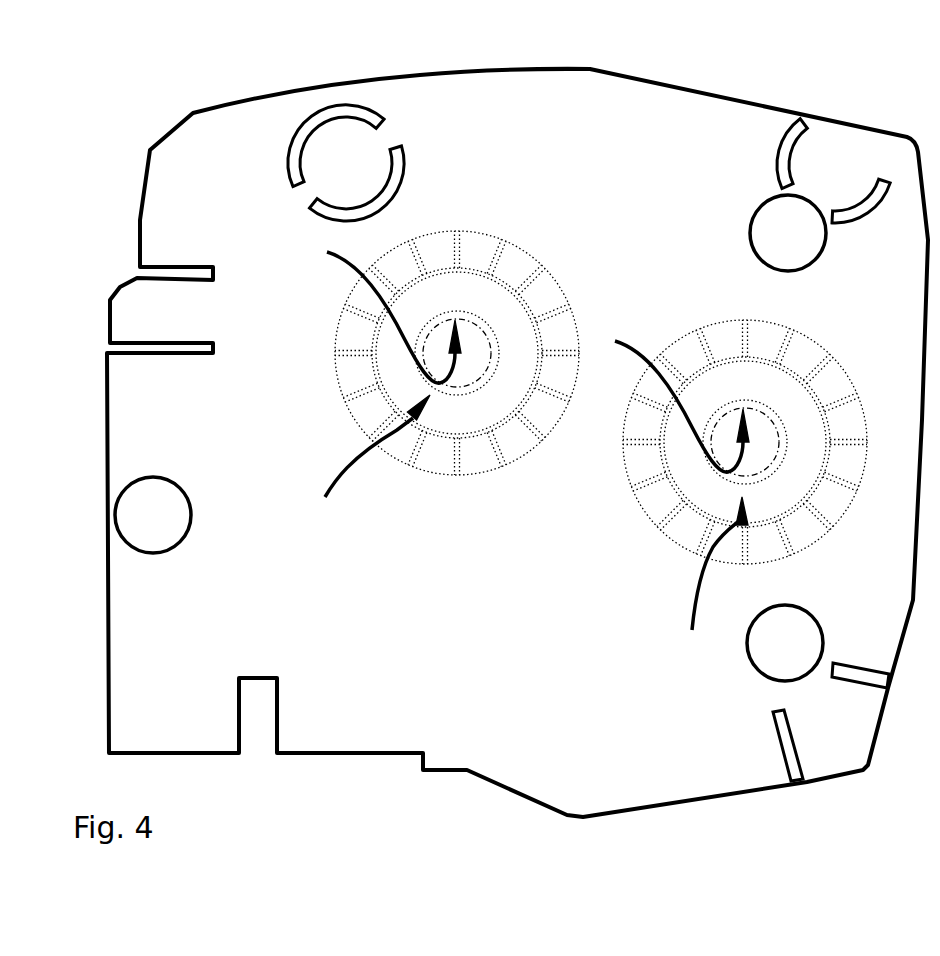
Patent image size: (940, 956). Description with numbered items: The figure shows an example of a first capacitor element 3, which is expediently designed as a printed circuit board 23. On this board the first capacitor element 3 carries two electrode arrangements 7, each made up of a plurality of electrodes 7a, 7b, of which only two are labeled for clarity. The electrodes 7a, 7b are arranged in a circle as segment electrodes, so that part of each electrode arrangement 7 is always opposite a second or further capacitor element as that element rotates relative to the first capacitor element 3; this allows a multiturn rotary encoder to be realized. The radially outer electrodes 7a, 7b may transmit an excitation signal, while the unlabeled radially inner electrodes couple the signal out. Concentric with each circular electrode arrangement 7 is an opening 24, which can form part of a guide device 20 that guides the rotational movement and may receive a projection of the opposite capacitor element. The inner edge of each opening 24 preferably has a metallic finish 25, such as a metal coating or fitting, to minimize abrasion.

The first capacitor element 3 is at (562, 68).
The electrode arrangement 7 is at (318, 338).
The electrode 7a is at (468, 232).
The electrode 7b is at (510, 237).
The guide device 20 is at (527, 530).
The printed circuit board 23 is at (451, 623).
The opening 24 is at (483, 375).
The metallic finish 25 is at (523, 354).